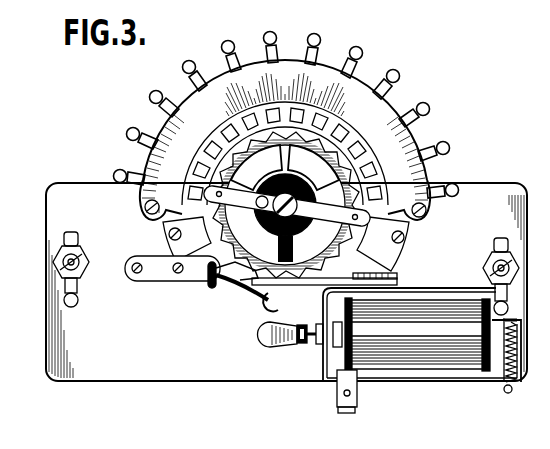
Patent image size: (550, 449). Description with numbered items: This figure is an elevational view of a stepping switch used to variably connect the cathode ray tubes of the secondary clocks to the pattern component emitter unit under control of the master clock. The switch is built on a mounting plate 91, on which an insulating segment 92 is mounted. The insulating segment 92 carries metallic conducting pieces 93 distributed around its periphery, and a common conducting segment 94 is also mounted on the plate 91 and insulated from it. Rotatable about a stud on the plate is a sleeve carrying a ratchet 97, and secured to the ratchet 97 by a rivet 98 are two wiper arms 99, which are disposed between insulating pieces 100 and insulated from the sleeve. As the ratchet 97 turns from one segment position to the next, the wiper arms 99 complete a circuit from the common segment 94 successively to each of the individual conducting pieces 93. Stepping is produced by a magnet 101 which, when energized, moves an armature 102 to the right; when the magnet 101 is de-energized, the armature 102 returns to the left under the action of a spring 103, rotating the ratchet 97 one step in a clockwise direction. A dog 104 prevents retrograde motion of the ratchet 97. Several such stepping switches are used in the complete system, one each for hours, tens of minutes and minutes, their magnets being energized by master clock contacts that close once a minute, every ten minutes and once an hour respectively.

The mounting plate 91 is at (113, 347).
The insulating segment 92 is at (377, 113).
The metallic conducting pieces 93 is at (388, 80).
The common conducting segment 94 is at (163, 224).
The ratchet 97 is at (347, 155).
The rivet 98 is at (238, 193).
The wiper arms 99 is at (309, 205).
The insulating pieces 100 is at (337, 205).
The magnet 101 is at (417, 343).
The armature 102 is at (296, 282).
The spring 103 is at (505, 368).
The dog 104 is at (240, 290).